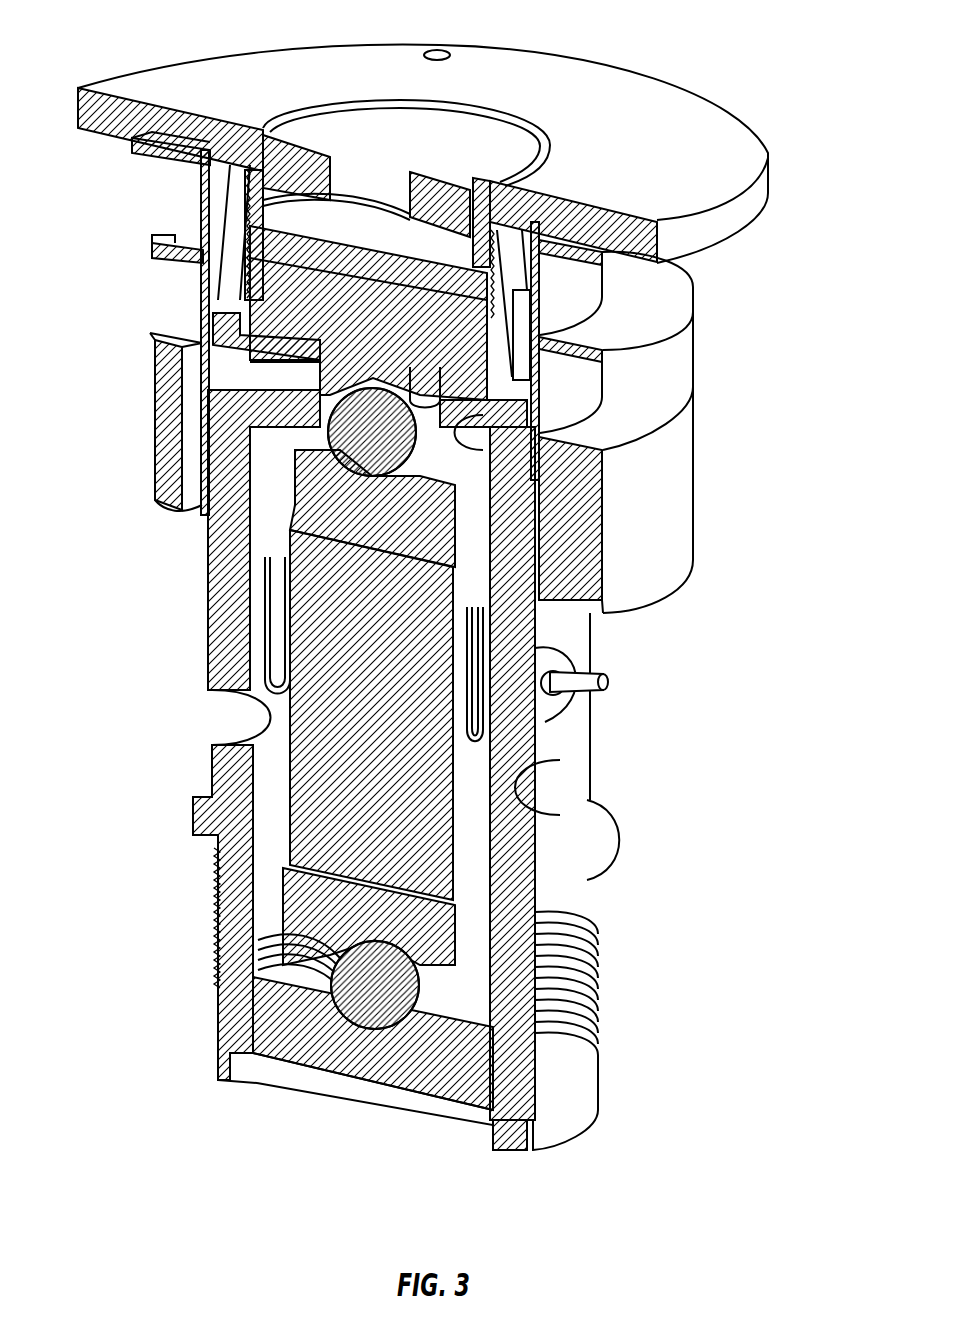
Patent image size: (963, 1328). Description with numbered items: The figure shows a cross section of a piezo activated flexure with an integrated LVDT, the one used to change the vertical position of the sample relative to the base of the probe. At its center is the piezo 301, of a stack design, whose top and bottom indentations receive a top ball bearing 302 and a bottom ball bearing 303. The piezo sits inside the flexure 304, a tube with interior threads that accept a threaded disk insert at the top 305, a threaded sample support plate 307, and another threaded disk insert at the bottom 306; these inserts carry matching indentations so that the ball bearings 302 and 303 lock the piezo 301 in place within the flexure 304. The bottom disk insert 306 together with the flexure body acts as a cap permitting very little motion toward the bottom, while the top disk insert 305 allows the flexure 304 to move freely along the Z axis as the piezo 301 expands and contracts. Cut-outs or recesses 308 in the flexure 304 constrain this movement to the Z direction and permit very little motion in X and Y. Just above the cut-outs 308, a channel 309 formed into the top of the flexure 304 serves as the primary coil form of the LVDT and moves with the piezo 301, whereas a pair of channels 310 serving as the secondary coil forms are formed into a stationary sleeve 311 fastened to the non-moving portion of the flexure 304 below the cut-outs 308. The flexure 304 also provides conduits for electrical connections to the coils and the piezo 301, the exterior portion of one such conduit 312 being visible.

The piezo 301 is at (356, 512).
The top ball bearing 302 is at (372, 462).
The bottom ball bearing 303 is at (372, 1012).
The flexure 304 is at (210, 352).
The top disk insert 305 is at (356, 312).
The bottom disk insert 306 is at (275, 1022).
The threaded sample support plate 307 is at (517, 112).
The cut-outs or recesses 308 is at (282, 406).
The channel 309 is at (168, 339).
The pair of channels 310 is at (170, 196).
The stationary sleeve 311 is at (675, 470).
The conduit 312 is at (600, 666).